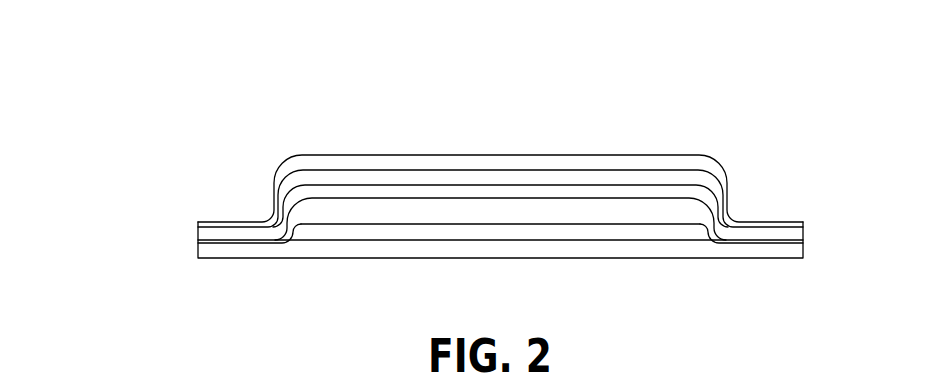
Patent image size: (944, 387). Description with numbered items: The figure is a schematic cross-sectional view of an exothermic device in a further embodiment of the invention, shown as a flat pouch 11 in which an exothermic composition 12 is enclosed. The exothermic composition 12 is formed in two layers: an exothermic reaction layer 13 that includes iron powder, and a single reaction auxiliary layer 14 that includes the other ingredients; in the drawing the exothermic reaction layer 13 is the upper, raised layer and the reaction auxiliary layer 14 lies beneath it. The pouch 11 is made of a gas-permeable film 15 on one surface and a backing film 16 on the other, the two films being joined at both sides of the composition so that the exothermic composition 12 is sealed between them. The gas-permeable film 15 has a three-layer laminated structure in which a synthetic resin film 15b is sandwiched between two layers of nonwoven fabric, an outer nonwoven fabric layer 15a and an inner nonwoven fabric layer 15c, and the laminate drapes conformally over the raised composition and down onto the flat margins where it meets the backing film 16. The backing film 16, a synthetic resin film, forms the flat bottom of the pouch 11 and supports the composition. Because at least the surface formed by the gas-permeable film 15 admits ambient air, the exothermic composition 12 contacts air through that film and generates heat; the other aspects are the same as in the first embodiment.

The pouch 11 is at (294, 159).
The exothermic composition 12 is at (377, 52).
The exothermic reaction layer 13 is at (383, 213).
The reaction auxiliary layer 14 is at (478, 237).
The gas-permeable film 15 is at (572, 50).
The nonwoven fabric layer 15a is at (572, 160).
The synthetic resin film 15b is at (647, 175).
The nonwoven fabric layer 15c is at (682, 193).
The backing film 16 is at (617, 250).